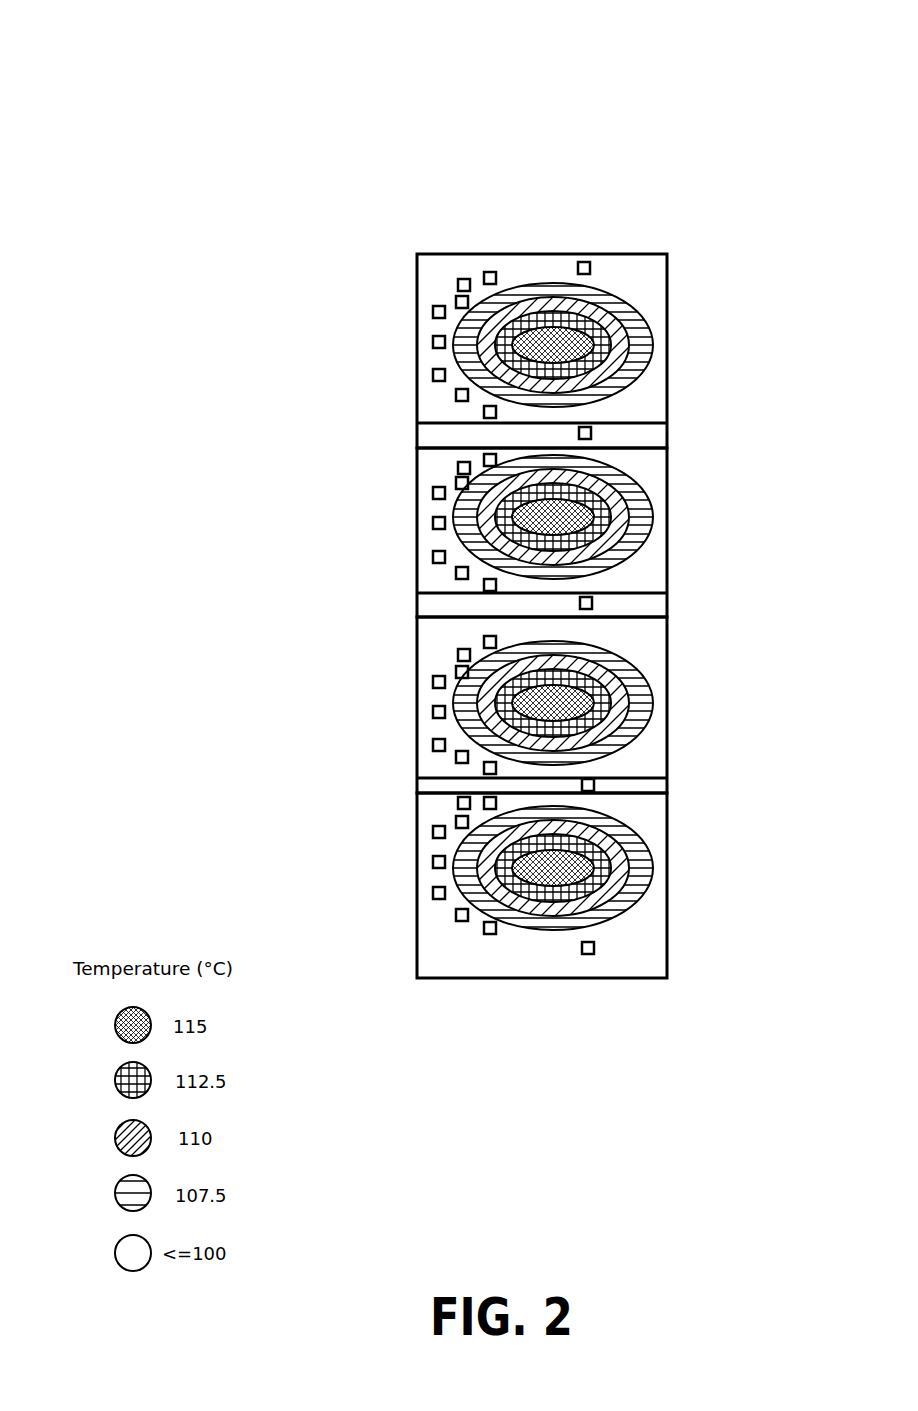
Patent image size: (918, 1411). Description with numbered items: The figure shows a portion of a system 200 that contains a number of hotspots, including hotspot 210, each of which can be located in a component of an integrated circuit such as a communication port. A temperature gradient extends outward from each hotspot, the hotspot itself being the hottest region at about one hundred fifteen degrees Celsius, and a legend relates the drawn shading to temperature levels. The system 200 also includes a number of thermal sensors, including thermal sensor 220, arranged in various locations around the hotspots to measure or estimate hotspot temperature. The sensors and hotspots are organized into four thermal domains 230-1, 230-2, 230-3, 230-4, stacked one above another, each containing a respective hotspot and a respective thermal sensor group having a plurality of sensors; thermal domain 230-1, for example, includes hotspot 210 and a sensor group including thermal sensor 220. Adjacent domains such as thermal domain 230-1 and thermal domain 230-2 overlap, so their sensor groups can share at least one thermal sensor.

The system 200 is at (164, 70).
The hotspot 210 is at (555, 330).
The thermal sensor 220 is at (593, 263).
The thermal domain 230-1 is at (591, 307).
The thermal domain 230-2 is at (407, 425).
The thermal domain 230-3 is at (673, 600).
The thermal domain 230-4 is at (398, 783).